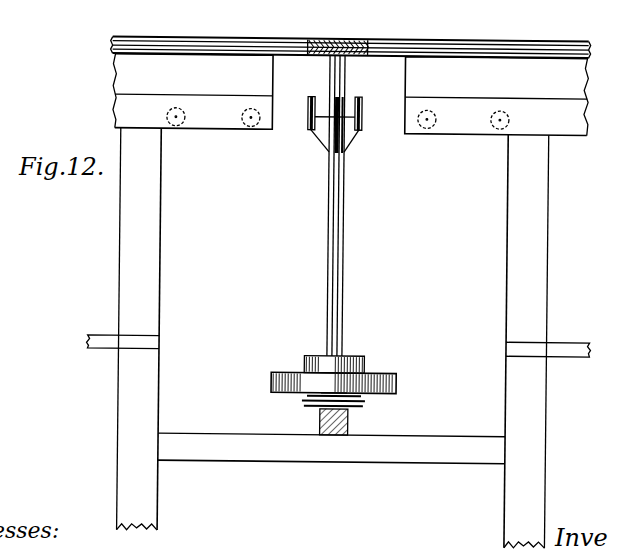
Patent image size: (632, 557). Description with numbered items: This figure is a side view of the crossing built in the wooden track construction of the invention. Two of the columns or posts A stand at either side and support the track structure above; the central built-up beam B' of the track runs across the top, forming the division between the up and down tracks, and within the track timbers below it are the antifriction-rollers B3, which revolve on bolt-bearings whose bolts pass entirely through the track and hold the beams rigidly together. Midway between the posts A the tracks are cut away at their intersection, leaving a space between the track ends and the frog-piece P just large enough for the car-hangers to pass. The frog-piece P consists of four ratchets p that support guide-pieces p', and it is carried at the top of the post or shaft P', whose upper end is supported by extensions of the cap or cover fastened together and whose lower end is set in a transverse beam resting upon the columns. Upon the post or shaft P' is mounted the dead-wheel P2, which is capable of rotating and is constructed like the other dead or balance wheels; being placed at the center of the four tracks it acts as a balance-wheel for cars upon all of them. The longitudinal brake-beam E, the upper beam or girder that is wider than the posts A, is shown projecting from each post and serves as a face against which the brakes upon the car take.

The central built-up beam B' is at (351, 34).
The antifriction-rollers B3 is at (350, 110).
The columns or posts A is at (348, 338).
The longitudinal brake-beam E is at (338, 334).
The frog-piece P is at (348, 205).
The post or shaft P' is at (352, 205).
The guide-pieces p' is at (348, 112).
The ratchets p is at (340, 145).
The dead-wheel P2 is at (353, 395).